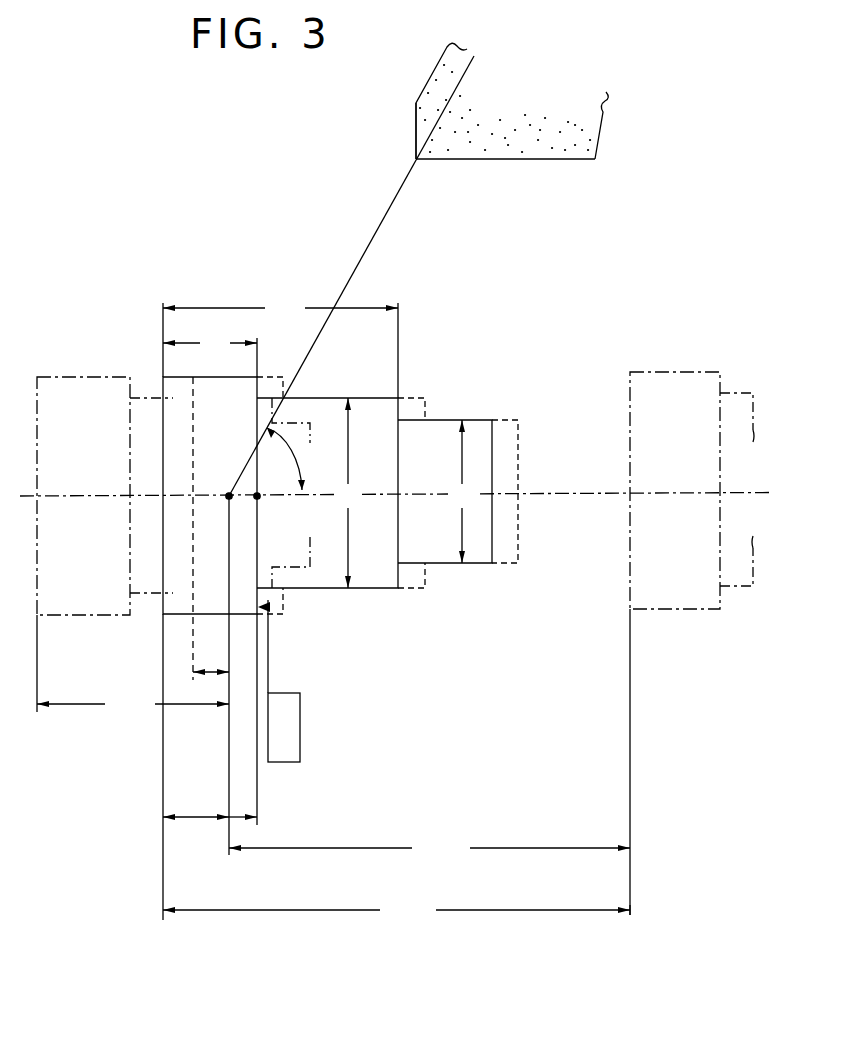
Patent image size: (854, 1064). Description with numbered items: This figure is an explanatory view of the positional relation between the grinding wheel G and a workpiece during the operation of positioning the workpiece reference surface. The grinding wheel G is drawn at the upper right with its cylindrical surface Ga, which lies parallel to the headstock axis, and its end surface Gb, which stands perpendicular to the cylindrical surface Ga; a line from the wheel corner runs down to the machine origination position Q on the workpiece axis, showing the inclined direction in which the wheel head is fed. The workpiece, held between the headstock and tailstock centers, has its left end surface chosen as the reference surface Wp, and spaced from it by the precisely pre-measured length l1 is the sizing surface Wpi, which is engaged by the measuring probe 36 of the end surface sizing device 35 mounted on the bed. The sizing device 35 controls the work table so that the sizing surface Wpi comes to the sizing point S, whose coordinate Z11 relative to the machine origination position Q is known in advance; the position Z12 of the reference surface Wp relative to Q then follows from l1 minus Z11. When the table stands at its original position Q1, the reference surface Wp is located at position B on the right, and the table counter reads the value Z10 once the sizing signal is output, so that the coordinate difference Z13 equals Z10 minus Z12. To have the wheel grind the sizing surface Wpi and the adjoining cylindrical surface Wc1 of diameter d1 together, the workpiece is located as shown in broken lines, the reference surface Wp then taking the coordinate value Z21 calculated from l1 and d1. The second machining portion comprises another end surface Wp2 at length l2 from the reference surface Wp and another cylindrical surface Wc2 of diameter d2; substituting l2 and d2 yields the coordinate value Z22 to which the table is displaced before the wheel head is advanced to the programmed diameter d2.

The grinding wheel G is at (600, 132).
The cylindrical surface Ga is at (516, 160).
The end surface Gb is at (416, 130).
The reference surface Wp is at (163, 388).
The sizing surface Wpi is at (259, 381).
The cylindrical surface Wc1 is at (363, 398).
The end surface Wp2 is at (400, 412).
The another cylindrical surface Wc2 is at (478, 420).
The position B is at (630, 492).
The machine origination position Q is at (229, 496).
The sizing point S is at (257, 496).
The diameter of the cylindrical surface Wc1 d1 is at (350, 493).
The diameter of the another cylindrical surface Wc2 d2 is at (462, 491).
The length l1 is at (210, 353).
The length l2 is at (280, 347).
The end surface sizing device 35 is at (300, 728).
The measuring probe 36 is at (268, 640).
The value Z10 is at (396, 910).
The coordinate value of the sizing point Z11 is at (246, 806).
The position of the workpiece reference surface Z12 is at (196, 767).
The coordinate difference Z13 is at (429, 762).
The coordinate value of the reference surface Z21 is at (211, 660).
The coordinate value of the reference surface Z22 is at (133, 704).
The table original position Q1 is at (634, 926).